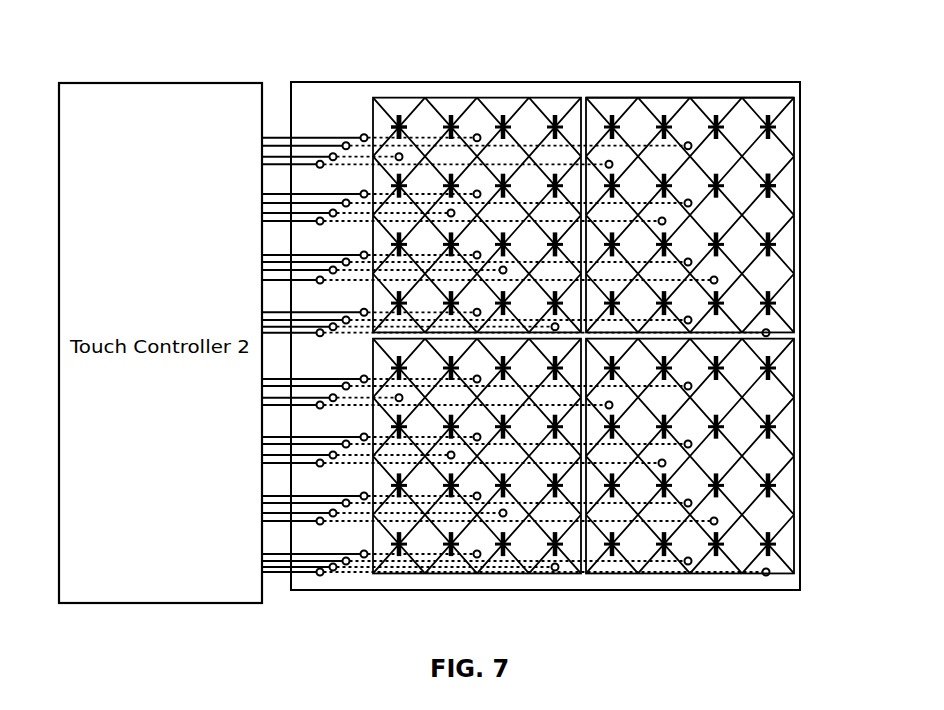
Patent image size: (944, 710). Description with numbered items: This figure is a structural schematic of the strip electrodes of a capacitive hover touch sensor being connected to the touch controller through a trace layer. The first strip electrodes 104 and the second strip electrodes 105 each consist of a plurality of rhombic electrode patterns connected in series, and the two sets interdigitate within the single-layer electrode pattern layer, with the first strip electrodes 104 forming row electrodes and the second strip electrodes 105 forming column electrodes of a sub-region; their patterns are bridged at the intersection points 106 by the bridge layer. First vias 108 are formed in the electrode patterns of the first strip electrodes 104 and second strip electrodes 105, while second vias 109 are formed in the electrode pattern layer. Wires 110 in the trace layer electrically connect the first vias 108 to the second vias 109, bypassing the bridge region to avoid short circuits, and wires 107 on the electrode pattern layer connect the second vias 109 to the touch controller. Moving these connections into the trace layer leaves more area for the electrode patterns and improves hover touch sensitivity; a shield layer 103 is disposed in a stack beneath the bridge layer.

The shield layer 103 is at (797, 390).
The first strip electrode 104 is at (785, 126).
The second strip electrode 105 is at (770, 105).
The bridge node 106 is at (768, 186).
The wire 107 is at (294, 136).
The first via 108 is at (477, 134).
The second via 109 is at (363, 134).
The wire 110 is at (413, 125).